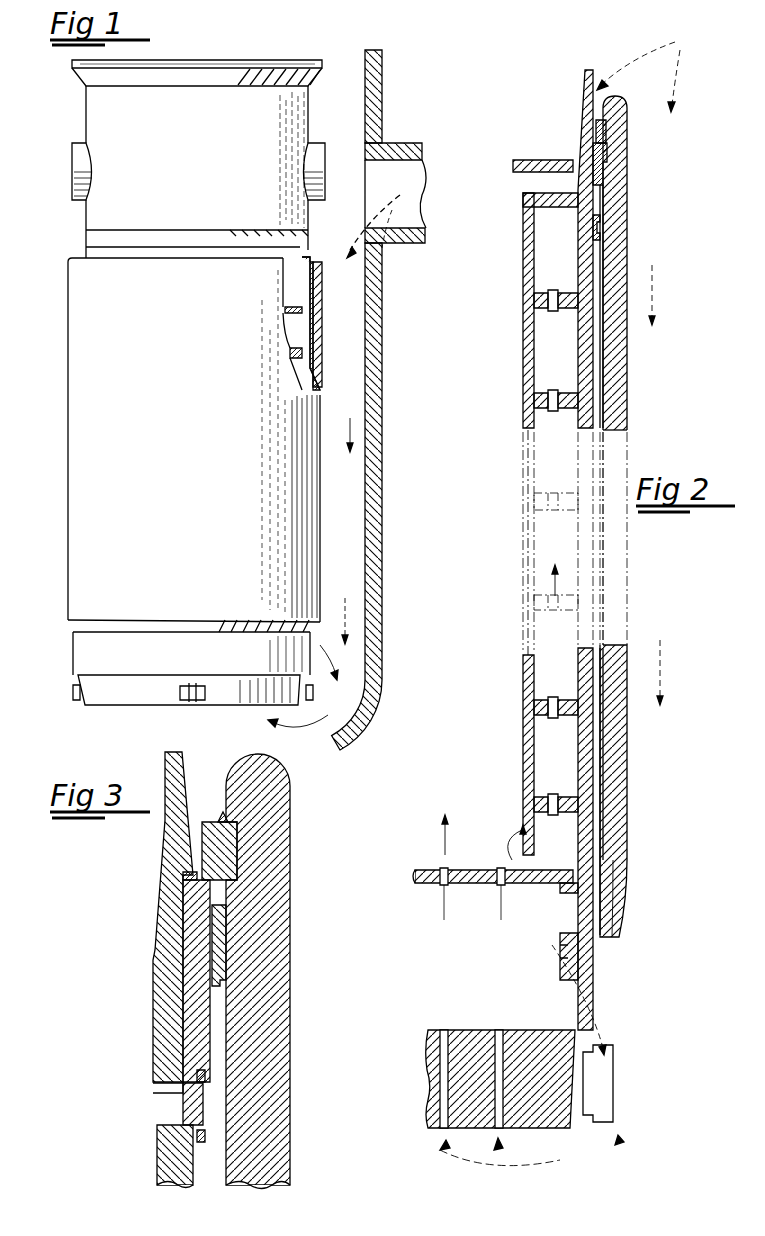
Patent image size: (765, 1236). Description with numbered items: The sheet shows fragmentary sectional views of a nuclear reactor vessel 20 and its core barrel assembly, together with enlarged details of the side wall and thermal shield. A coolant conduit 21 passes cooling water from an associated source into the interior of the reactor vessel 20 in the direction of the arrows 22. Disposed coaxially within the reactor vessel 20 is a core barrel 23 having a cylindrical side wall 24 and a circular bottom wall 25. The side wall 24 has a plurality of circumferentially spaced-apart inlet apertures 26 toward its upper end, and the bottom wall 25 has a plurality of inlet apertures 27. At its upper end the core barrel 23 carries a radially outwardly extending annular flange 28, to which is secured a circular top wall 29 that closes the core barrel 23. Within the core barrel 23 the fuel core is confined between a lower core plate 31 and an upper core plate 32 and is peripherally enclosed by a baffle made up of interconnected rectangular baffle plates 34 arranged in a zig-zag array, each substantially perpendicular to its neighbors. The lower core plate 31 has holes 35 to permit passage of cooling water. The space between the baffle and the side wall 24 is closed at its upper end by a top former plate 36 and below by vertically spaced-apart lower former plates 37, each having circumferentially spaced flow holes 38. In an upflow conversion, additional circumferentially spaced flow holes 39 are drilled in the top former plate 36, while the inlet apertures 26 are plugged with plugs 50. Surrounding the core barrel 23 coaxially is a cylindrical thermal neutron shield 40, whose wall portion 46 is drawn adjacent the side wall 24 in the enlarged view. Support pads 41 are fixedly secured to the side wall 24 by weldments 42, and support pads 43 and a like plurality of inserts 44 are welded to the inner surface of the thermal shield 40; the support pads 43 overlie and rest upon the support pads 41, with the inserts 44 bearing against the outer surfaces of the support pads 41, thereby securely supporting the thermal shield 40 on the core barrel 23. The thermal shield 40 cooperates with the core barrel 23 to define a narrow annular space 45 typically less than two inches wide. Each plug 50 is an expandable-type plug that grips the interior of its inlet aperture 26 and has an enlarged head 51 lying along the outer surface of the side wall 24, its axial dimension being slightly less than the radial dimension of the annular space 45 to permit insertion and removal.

In FIG. 1, the nuclear reactor vessel 20 is at (382, 86).
In FIG. 1, the coolant conduit 21 is at (407, 143).
In FIG. 1, the arrows 22 is at (350, 264).
In FIG. 1, the core barrel 23 is at (86, 226).
In FIG. 1, the cylindrical side wall 24 is at (98, 245).
In FIG. 2, the cylindrical side wall 24 is at (590, 412).
In FIG. 3, the cylindrical side wall 24 is at (163, 997).
In FIG. 1, the circular bottom wall 25 is at (128, 697).
In FIG. 2, the circular bottom wall 25 is at (428, 1104).
In FIG. 2, the inlet apertures 26 is at (580, 233).
In FIG. 3, the inlet apertures 26 is at (165, 1126).
In FIG. 2, the inlet apertures 27 is at (500, 1036).
In FIG. 1, the annular flange 28 is at (72, 64).
In FIG. 1, the circular top wall 29 is at (170, 74).
In FIG. 2, the lower core plate 31 is at (421, 872).
In FIG. 2, the upper core plate 32 is at (530, 165).
In FIG. 2, the baffle plates 34 is at (523, 372).
In FIG. 2, the holes 35 is at (500, 884).
In FIG. 1, the top former plate 36 is at (294, 310).
In FIG. 2, the top former plate 36 is at (535, 200).
In FIG. 2, the lower former plates 37 is at (537, 800).
In FIG. 2, the flow holes 38 is at (555, 705).
In FIG. 2, the flow holes 39 is at (557, 225).
In FIG. 1, the thermal neutron shield 40 is at (68, 435).
In FIG. 2, the thermal neutron shield 40 is at (627, 700).
In FIG. 3, the thermal neutron shield 40 is at (291, 912).
In FIG. 3, the support pads 41 is at (197, 930).
In FIG. 3, the weldments 42 is at (185, 878).
In FIG. 3, the support pads 43 is at (205, 840).
In FIG. 3, the inserts 44 is at (222, 957).
In FIG. 3, the annular space 45 is at (212, 1043).
In FIG. 2, the outer wall 46 is at (600, 346).
In FIG. 2, the plugs 50 is at (601, 228).
In FIG. 3, the plugs 50 is at (185, 1100).
In FIG. 3, the enlarged head 51 is at (206, 1136).